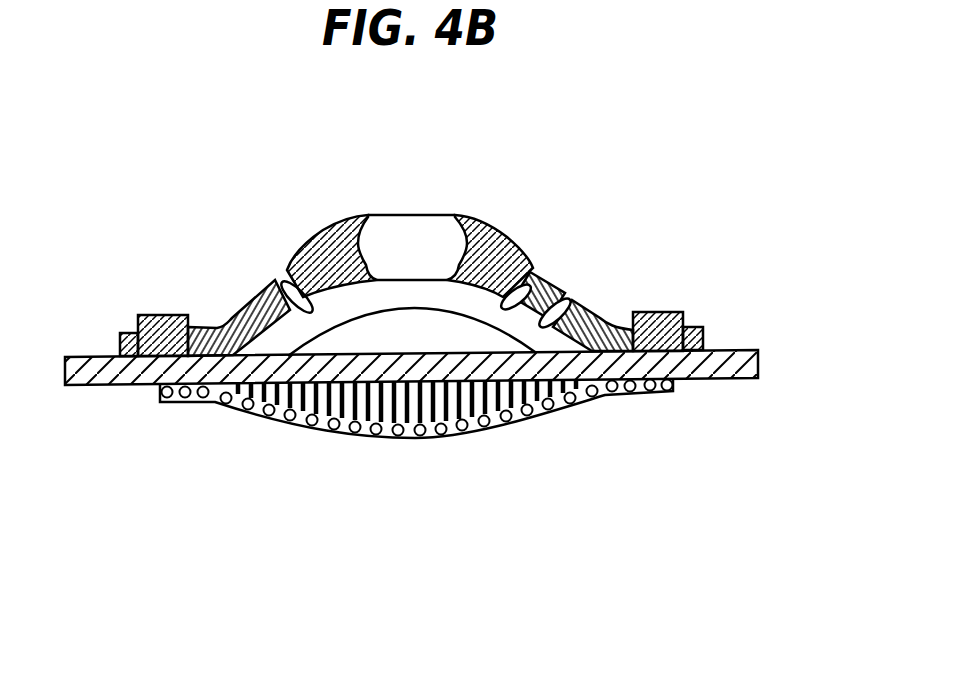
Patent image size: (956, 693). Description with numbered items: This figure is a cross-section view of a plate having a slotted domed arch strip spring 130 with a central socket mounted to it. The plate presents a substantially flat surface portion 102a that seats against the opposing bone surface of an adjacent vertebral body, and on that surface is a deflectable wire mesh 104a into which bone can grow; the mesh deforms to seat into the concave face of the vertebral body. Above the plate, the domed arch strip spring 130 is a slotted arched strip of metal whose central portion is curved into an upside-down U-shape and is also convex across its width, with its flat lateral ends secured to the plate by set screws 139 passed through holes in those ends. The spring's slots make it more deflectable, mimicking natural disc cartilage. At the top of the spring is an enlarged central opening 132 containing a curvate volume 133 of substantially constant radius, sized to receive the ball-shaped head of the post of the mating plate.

The flat surface portion 102a is at (740, 380).
The wire mesh 104a is at (530, 412).
The domed arch strip spring 130 is at (290, 180).
The central opening 132 is at (396, 243).
The curvate volume 133 is at (432, 230).
The set screws 139 is at (162, 317).